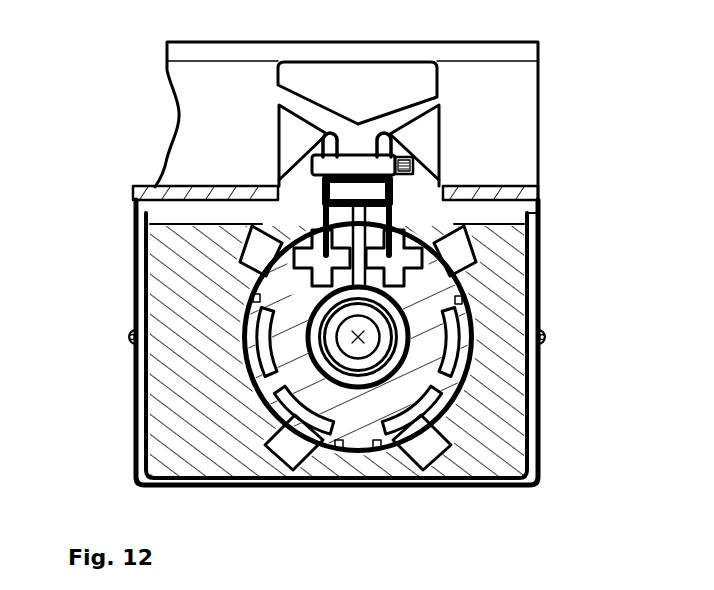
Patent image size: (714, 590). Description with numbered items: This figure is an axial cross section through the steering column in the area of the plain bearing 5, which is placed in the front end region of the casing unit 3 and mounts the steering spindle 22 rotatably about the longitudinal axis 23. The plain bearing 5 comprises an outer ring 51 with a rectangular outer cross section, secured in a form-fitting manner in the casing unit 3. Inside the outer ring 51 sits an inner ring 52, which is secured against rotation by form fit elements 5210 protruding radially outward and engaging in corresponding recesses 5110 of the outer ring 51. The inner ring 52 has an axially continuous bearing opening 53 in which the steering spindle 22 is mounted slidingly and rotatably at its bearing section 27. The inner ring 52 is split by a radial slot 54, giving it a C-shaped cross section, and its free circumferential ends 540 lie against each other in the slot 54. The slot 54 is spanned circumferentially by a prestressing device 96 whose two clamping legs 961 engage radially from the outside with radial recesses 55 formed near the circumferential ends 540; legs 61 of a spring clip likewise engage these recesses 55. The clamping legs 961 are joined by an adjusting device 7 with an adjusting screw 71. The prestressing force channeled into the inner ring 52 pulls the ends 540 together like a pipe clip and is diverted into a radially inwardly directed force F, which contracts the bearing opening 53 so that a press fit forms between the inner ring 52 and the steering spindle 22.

The casing unit 3 is at (530, 420).
The plain bearing 5 is at (480, 317).
The adjusting device 7 is at (361, 145).
The steering spindle 22 is at (340, 345).
The longitudinal axis 23 is at (268, 388).
The bearing section 27 is at (300, 372).
The outer ring 51 is at (490, 373).
The inner ring 52 is at (427, 348).
The bearing opening 53 is at (335, 322).
The slot 54 is at (354, 215).
The recesses 55 is at (320, 253).
The legs 61 is at (262, 222).
The adjusting screw 71 is at (376, 162).
The prestressing device 96 is at (440, 191).
The clamping legs 961 is at (528, 257).
The free circumferential ends 540 is at (322, 204).
The recesses of the outer ring 5110 is at (275, 268).
The form fit elements 5210 is at (262, 253).
The radially inwardly directed force F is at (330, 271).